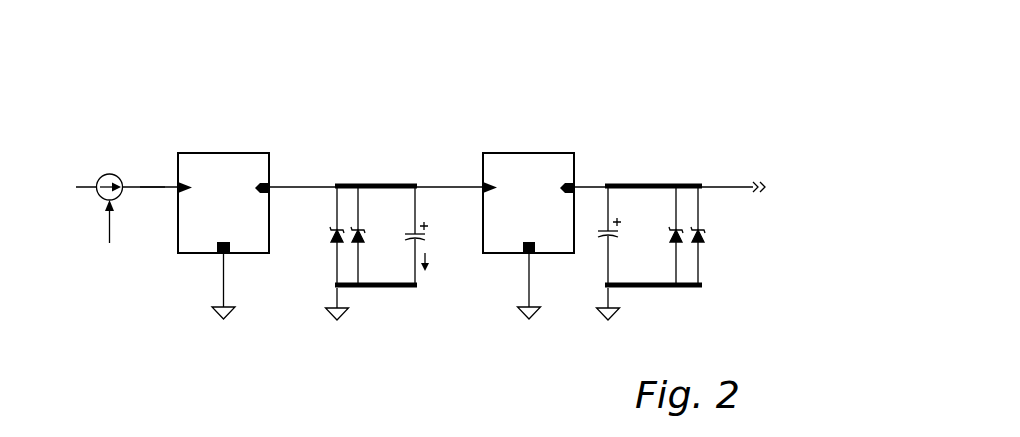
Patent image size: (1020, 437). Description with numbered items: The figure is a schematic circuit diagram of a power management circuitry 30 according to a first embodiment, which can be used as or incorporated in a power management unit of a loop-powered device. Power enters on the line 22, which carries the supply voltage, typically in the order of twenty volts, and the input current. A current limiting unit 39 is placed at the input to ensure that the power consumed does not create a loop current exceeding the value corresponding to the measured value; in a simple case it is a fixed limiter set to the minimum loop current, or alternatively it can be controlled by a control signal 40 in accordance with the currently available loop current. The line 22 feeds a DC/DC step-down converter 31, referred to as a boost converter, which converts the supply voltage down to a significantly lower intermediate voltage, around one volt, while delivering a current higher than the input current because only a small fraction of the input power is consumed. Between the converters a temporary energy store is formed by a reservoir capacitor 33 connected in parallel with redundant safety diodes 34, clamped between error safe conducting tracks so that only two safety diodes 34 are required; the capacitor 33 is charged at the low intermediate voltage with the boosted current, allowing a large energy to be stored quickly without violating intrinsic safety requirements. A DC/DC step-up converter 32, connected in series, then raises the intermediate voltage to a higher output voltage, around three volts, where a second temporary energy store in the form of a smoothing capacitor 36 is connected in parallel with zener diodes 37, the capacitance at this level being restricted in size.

The line 22 is at (152, 182).
The power management circuitry 30 is at (548, 82).
The DC/DC step-down converter 31 is at (178, 244).
The DC/DC step-up converter 32 is at (483, 253).
The reservoir capacitor 33 is at (410, 234).
The safety diodes 34 is at (367, 243).
The smoothing capacitor 36 is at (600, 237).
The zener diodes 37 is at (708, 236).
The current limiting unit 39 is at (99, 197).
The control signal 40 is at (112, 226).